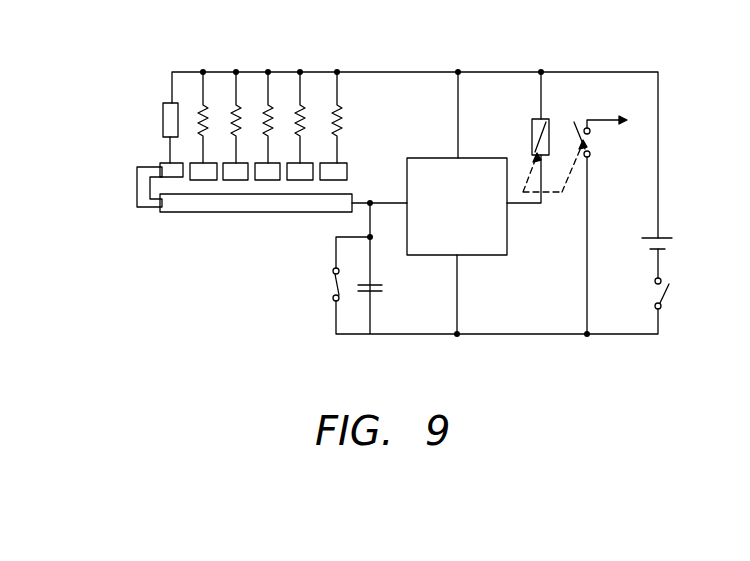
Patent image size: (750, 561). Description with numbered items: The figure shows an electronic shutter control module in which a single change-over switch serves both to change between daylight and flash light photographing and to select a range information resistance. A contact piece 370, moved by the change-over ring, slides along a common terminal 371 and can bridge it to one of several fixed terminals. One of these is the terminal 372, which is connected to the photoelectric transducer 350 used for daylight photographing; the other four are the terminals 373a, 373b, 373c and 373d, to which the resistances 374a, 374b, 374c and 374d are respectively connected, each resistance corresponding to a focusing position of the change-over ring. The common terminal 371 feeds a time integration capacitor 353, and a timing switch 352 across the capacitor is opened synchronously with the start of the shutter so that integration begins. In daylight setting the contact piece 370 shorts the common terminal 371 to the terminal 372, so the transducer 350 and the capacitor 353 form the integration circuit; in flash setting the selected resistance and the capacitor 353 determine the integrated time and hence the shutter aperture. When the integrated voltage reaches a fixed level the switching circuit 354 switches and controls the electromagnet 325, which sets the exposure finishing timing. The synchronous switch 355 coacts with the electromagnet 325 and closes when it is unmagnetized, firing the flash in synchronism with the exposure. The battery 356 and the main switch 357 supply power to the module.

The electromagnet 325 is at (532, 135).
The photoelectric transducer 350 is at (163, 110).
The timing switch 352 is at (332, 282).
The time integration capacitor 353 is at (373, 290).
The switching circuit 354 is at (472, 222).
The synchronous switch 355 is at (592, 138).
The battery 356 is at (668, 250).
The main switch 357 is at (680, 287).
The contact piece 370 is at (142, 192).
The common terminal 371 is at (232, 198).
The terminal 372 is at (180, 167).
The terminal 373a is at (207, 176).
The terminal 373b is at (237, 176).
The terminal 373c is at (270, 178).
The terminal 373d is at (303, 164).
The resistance 374a is at (205, 108).
The resistance 374b is at (240, 108).
The resistance 374c is at (271, 108).
The resistance 374d is at (306, 112).